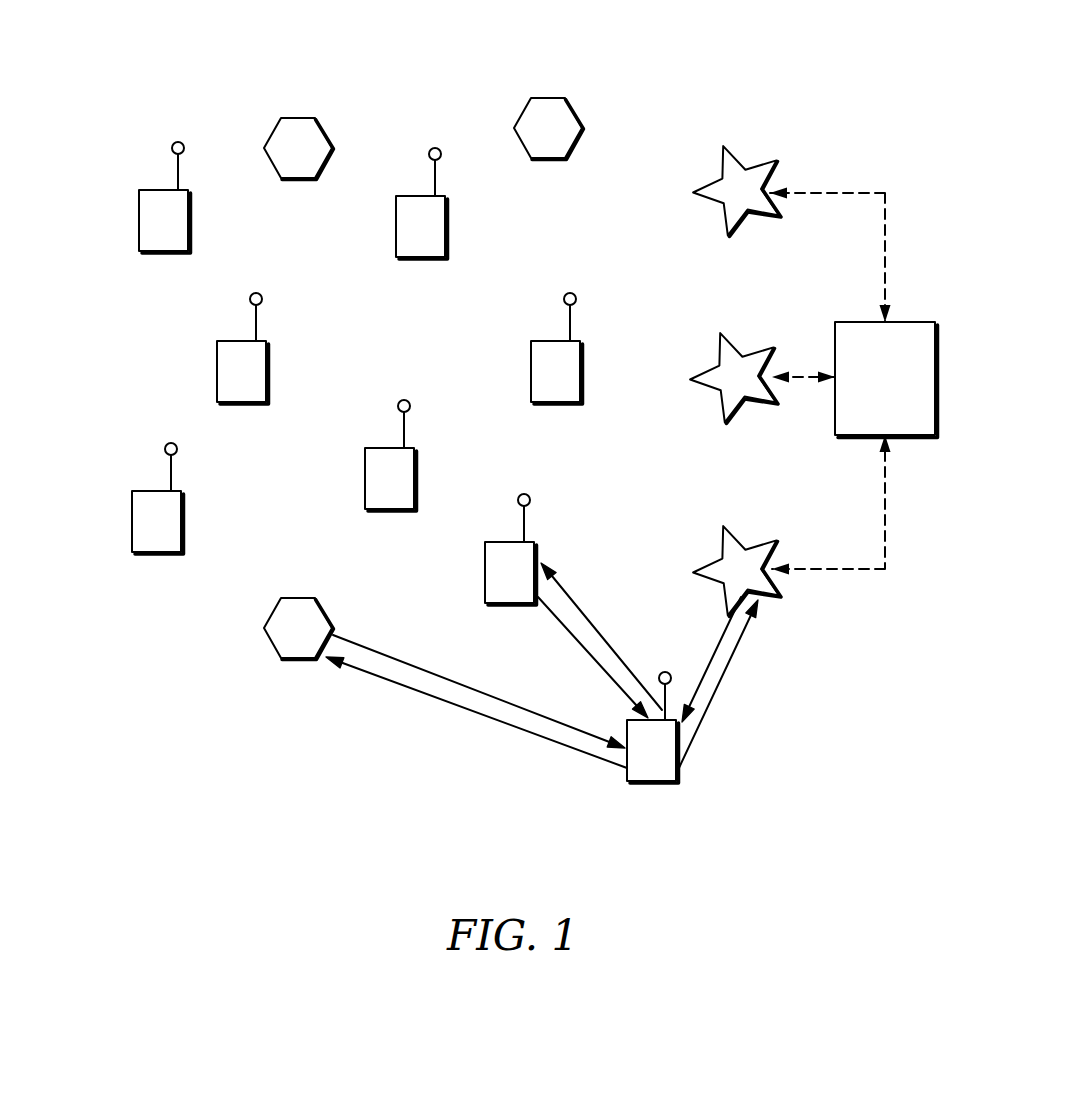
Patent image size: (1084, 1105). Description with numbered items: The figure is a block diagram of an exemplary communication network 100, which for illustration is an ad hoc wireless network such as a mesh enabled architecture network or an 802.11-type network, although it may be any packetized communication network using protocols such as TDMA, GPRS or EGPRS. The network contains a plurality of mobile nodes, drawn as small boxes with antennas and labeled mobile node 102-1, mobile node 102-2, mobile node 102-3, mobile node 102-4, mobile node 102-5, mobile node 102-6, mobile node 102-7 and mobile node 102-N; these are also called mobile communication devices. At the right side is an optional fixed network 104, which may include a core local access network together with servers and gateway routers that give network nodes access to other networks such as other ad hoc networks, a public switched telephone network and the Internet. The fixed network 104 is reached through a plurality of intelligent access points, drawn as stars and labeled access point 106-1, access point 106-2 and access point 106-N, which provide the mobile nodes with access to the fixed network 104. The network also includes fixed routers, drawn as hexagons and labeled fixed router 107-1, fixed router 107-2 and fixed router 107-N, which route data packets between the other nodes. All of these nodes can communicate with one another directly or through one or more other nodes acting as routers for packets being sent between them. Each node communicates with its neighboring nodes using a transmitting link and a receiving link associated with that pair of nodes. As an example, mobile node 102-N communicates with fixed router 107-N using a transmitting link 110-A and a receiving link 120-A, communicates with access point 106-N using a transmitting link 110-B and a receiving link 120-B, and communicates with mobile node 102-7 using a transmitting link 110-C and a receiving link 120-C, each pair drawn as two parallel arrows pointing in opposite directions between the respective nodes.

The communication network 100 is at (858, 68).
The mobile node 102-1 is at (148, 190).
The mobile node 102-2 is at (405, 196).
The mobile node 102-3 is at (225, 341).
The mobile node 102-4 is at (150, 491).
The mobile node 102-5 is at (375, 448).
The mobile node 102-6 is at (540, 341).
The mobile node 102-7 is at (497, 542).
The mobile node 102-N is at (653, 783).
The fixed network 104 is at (848, 322).
The intelligent access point 106-1 is at (707, 182).
The intelligent access point 106-2 is at (702, 370).
The intelligent access point 106-N is at (705, 560).
The fixed router 107-1 is at (286, 118).
The fixed router 107-2 is at (536, 98).
The fixed router 107-N is at (287, 598).
The transmitting link 110-A is at (474, 713).
The transmitting link 110-B is at (728, 676).
The transmitting link 110-C is at (578, 600).
The receiving link 120-A is at (425, 668).
The receiving link 120-B is at (716, 638).
The receiving link 120-C is at (604, 672).